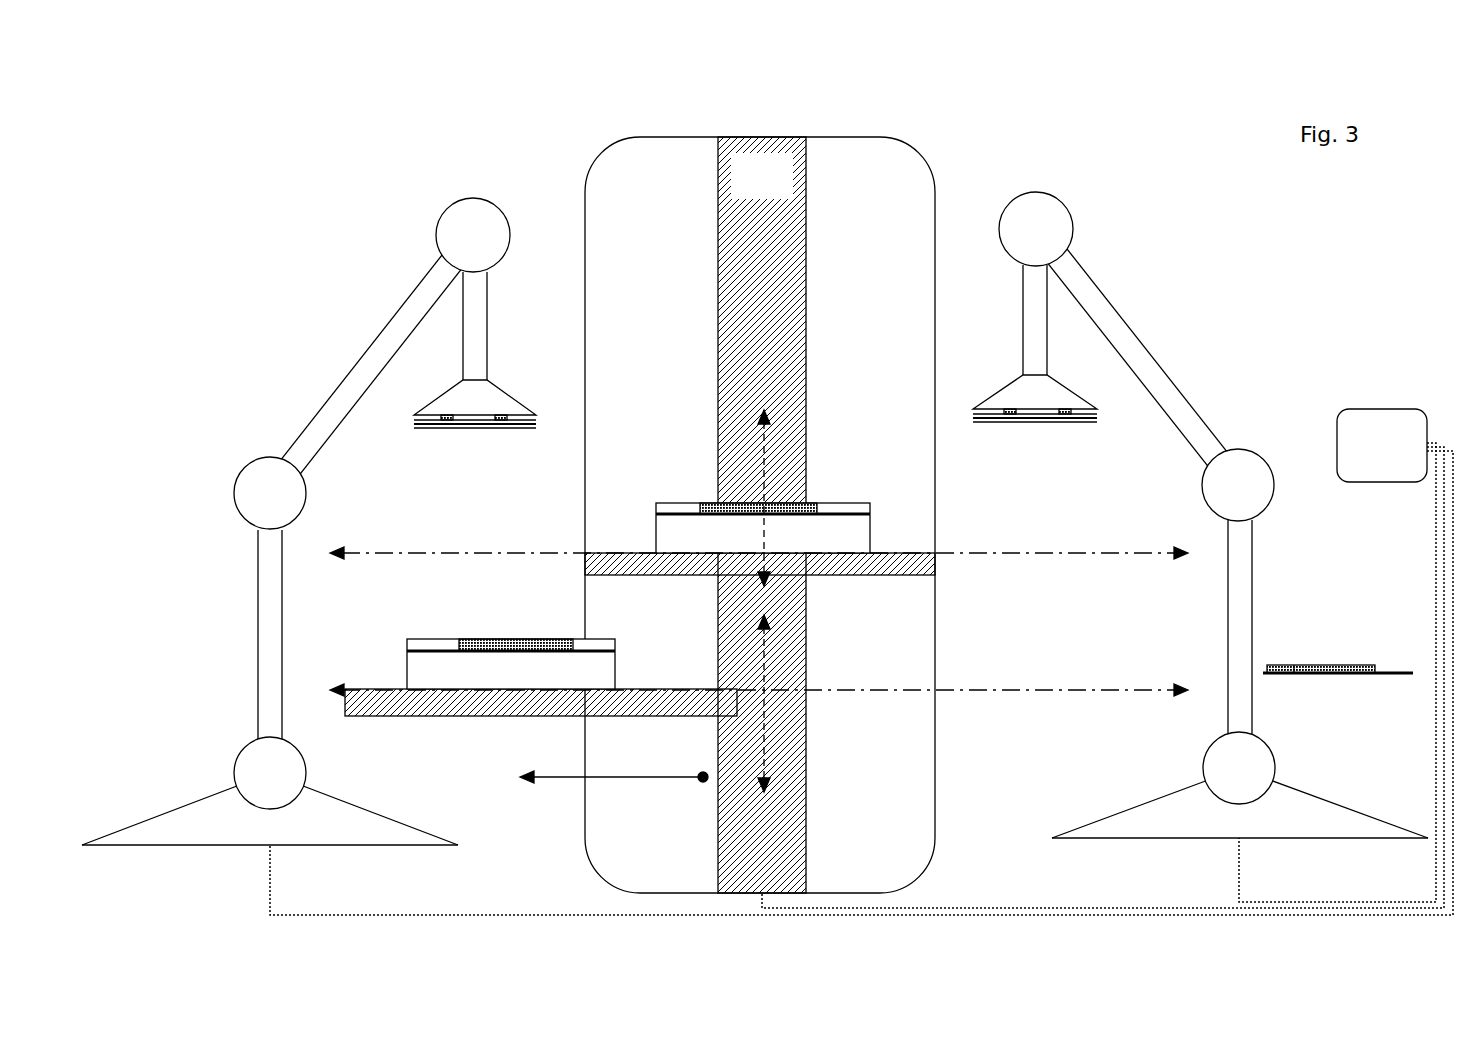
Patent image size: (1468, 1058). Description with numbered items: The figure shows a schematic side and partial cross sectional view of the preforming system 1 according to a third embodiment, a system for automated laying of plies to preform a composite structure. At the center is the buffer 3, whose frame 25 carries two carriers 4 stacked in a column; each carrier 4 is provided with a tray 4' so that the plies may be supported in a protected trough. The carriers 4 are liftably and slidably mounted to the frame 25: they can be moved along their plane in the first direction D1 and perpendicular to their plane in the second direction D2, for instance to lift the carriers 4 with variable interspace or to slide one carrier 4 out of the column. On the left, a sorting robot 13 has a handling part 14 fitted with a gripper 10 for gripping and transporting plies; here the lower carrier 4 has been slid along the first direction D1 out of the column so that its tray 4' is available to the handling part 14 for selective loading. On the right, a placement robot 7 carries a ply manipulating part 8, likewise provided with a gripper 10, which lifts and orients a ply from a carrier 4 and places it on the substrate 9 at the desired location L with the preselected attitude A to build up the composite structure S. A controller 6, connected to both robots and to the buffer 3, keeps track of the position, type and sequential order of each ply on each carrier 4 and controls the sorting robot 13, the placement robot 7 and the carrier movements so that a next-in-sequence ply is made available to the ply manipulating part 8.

The preforming system 1 is at (174, 58).
The buffer 3 is at (760, 126).
The frame 25 is at (776, 192).
The carrier 4 is at (640, 656).
The tray 4' is at (638, 596).
The sorting robot 13 is at (315, 467).
The placement robot 7 is at (1200, 442).
The handling part 14 is at (532, 415).
The ply manipulating part 8 is at (1095, 409).
The gripper 10 is at (503, 417).
The controller 6 is at (1378, 409).
The substrate 9 is at (1338, 618).
The composite structure S is at (1320, 618).
The desired location L is at (1320, 618).
The preselected attitude A is at (1289, 665).
The first direction D1 is at (759, 650).
The second direction D2 is at (764, 452).